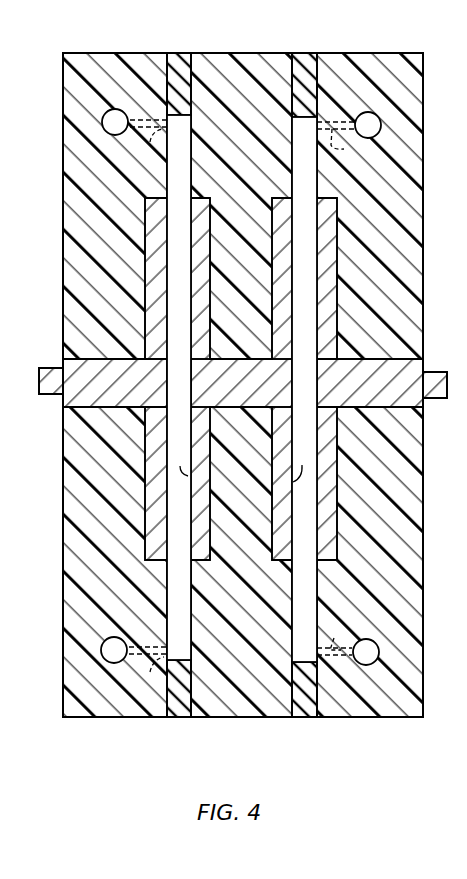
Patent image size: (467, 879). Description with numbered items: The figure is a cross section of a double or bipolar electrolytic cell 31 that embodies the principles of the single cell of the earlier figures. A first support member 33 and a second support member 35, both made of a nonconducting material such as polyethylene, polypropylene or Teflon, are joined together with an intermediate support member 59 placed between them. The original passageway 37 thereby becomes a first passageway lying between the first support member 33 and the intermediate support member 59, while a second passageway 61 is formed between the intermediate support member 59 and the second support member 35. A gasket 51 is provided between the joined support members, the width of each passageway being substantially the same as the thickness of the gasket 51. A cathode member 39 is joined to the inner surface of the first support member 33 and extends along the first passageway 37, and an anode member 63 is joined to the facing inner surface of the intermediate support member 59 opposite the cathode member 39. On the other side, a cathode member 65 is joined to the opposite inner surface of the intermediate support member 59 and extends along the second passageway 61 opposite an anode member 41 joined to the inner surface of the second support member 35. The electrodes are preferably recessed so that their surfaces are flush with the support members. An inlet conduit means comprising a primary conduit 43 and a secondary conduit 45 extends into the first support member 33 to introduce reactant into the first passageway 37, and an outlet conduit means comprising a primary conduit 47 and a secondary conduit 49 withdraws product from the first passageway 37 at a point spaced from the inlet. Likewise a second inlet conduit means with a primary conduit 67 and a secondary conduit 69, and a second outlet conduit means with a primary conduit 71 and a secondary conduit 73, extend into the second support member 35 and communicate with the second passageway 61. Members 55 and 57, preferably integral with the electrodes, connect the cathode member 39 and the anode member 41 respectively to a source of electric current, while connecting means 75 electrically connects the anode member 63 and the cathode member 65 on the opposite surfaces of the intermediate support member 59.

The electrolytic cell 31 is at (430, 111).
The first support member 33 is at (110, 53).
The second support member 35 is at (380, 53).
The passageway 37 is at (178, 173).
The cathode member 39 is at (155, 250).
The anode member 41 is at (330, 278).
The primary conduit 43 is at (114, 637).
The secondary conduit 45 is at (152, 671).
The primary conduit 47 is at (116, 109).
The secondary conduit 49 is at (150, 142).
The gasket 51 is at (176, 53).
The member for electrically connecting cathode 55 is at (50, 396).
The member for electrically connecting anode 57 is at (438, 399).
The intermediate support member 59 is at (245, 53).
The second passageway 61 is at (300, 167).
The anode member 63 is at (200, 255).
The cathode member 65 is at (280, 315).
The primary conduit 67 is at (372, 665).
The secondary conduit 69 is at (336, 648).
The primary conduit 71 is at (370, 112).
The secondary conduit 73 is at (336, 149).
The connecting means 75 is at (220, 403).